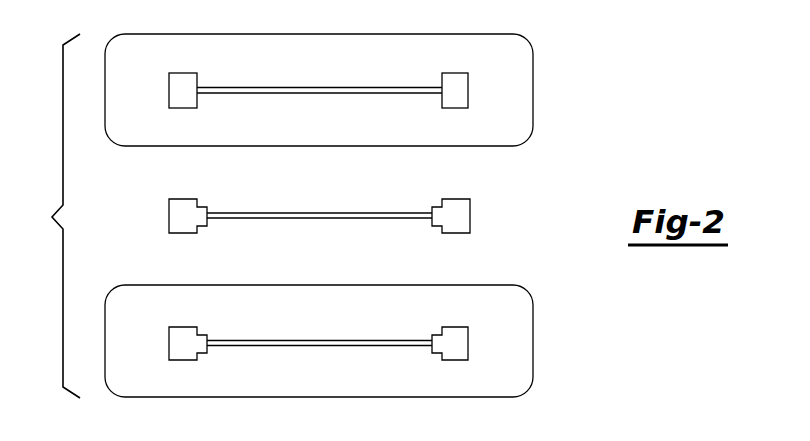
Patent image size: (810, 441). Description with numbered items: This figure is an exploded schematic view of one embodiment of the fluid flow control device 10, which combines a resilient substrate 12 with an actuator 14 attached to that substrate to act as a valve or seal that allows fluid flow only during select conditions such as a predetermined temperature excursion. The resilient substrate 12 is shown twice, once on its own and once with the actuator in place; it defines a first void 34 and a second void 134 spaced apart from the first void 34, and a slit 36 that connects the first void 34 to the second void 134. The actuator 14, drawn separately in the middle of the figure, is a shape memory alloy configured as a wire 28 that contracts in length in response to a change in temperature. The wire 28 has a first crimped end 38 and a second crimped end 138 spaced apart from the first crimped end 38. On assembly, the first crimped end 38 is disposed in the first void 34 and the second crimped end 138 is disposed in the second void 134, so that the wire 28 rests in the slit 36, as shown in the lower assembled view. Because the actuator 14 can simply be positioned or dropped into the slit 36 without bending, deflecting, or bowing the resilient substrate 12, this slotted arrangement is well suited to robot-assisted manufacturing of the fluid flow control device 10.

The fluid flow control device 10 is at (53, 216).
The resilient substrate 12 is at (513, 100).
The actuator 14 is at (312, 340).
The wire 28 is at (312, 213).
The first void 34 is at (462, 68).
The slit 36 is at (318, 85).
The first crimped end 38 is at (455, 199).
The second void 134 is at (175, 73).
The second crimped end 138 is at (182, 199).